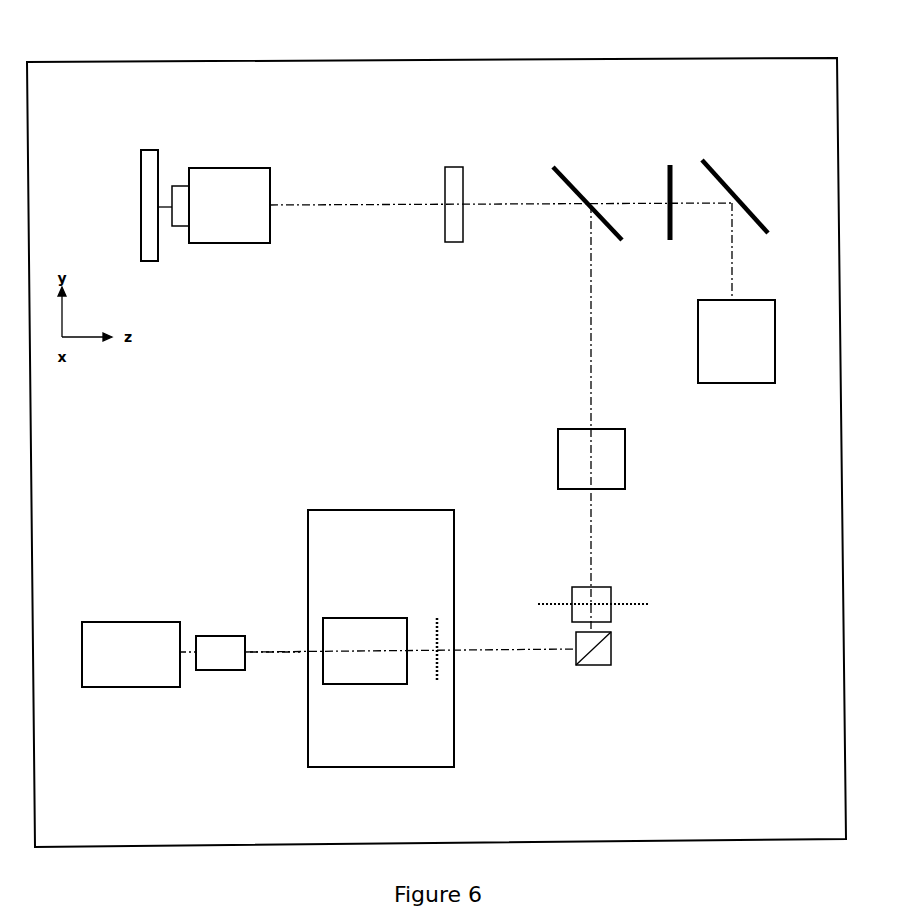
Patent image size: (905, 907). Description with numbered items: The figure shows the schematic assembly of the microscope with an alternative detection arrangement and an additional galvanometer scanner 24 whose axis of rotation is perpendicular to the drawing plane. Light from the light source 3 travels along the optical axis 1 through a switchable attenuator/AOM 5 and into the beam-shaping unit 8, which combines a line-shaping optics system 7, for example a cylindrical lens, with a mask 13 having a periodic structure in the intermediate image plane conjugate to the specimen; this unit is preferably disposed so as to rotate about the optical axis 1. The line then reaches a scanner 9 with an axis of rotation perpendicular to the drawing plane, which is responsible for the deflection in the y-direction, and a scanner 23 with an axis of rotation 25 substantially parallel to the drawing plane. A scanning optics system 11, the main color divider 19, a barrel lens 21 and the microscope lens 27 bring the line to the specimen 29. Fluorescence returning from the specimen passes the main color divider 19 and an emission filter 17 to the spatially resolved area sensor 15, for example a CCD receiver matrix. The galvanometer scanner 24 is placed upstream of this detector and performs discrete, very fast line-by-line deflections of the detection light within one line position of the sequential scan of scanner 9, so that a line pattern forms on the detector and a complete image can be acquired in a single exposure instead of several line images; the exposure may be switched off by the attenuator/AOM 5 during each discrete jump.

The optical axis 1 is at (260, 653).
The light source 3 is at (147, 653).
The switchable attenuator/AOM 5 is at (212, 658).
The line-shaping optics system 7 is at (347, 660).
The beam-shaping unit 8 is at (422, 718).
The scanner 9 is at (600, 655).
The scanning optics system 11 is at (605, 447).
The mask with a periodic structure 13 is at (437, 608).
The spatially resolved area sensor 15 is at (777, 362).
The emission filter 17 is at (668, 163).
The main color divider 19 is at (573, 180).
The barrel lens 21 is at (452, 187).
The scanner 23 is at (595, 600).
The galvanometer scanner 24 is at (738, 192).
The axis of rotation 25 is at (625, 602).
The microscope lens 27 is at (207, 222).
The specimen 29 is at (148, 165).